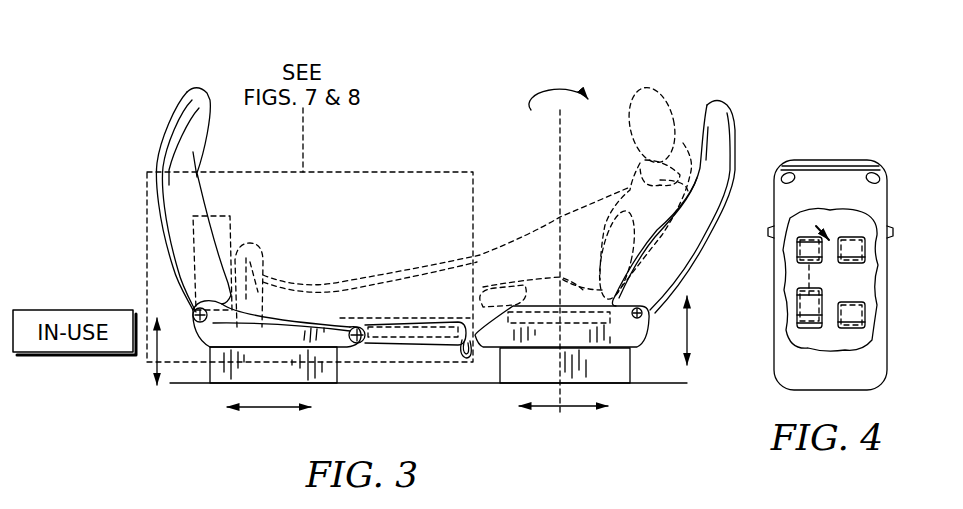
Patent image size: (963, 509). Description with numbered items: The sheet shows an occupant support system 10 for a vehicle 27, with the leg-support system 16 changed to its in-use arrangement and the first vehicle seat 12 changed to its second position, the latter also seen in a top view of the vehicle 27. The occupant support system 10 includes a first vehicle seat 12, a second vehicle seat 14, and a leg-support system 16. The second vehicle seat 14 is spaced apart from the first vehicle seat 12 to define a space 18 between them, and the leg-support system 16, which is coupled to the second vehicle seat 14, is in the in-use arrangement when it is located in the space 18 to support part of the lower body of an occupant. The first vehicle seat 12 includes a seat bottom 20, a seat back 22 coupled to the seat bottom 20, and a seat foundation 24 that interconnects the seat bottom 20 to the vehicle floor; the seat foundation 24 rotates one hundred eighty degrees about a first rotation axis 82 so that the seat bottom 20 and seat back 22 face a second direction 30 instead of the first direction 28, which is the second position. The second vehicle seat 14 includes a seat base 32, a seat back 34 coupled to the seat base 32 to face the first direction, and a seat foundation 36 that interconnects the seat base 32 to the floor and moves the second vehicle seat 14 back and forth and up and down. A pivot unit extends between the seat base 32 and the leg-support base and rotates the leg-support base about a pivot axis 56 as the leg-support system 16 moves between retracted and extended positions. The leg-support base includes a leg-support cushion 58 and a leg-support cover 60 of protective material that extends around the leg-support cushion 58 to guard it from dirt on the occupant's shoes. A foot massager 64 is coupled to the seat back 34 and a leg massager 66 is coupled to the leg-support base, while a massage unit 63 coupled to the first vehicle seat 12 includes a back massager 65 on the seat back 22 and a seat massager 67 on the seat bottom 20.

In FIG. 3, the occupant support system 10 is at (68, 48).
In FIG. 3, the first vehicle seat 12 is at (143, 160).
In FIG. 4, the first vehicle seat 12 is at (823, 204).
In FIG. 3, the second vehicle seat 14 is at (746, 121).
In FIG. 4, the second vehicle seat 14 is at (819, 334).
In FIG. 3, the leg-support system 16 is at (398, 202).
In FIG. 3, the space 18 is at (437, 248).
In FIG. 4, the space 18 is at (827, 273).
In FIG. 3, the seat bottom 20 is at (650, 345).
In FIG. 3, the seat back 22 is at (743, 162).
In FIG. 3, the seat foundation 24 is at (634, 371).
In FIG. 4, the vehicle 27 is at (893, 165).
In FIG. 4, the first direction 28 is at (808, 303).
In FIG. 4, the second direction 30 is at (809, 260).
In FIG. 3, the seat base 32 is at (196, 346).
In FIG. 3, the seat back 34 is at (152, 144).
In FIG. 3, the seat foundation 36 is at (182, 448).
In FIG. 3, the pivot axis 56 is at (355, 346).
In FIG. 3, the leg-support cushion 58 is at (421, 348).
In FIG. 3, the leg-support cover 60 is at (451, 358).
In FIG. 3, the massage unit 63 is at (690, 283).
In FIG. 3, the foot massager 64 is at (188, 232).
In FIG. 3, the back massager 65 is at (669, 259).
In FIG. 3, the leg massager 66 is at (407, 350).
In FIG. 3, the seat massager 67 is at (546, 347).
In FIG. 3, the first rotation axis 82 is at (563, 147).